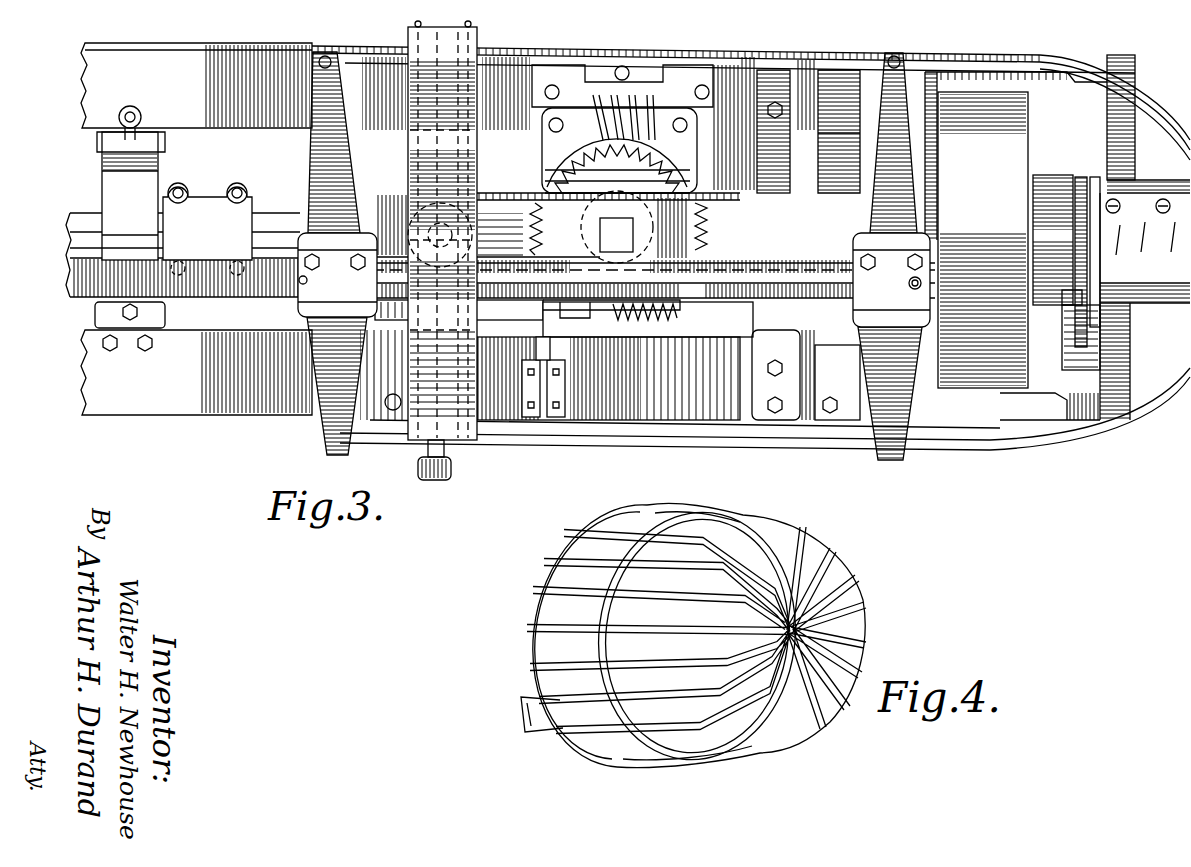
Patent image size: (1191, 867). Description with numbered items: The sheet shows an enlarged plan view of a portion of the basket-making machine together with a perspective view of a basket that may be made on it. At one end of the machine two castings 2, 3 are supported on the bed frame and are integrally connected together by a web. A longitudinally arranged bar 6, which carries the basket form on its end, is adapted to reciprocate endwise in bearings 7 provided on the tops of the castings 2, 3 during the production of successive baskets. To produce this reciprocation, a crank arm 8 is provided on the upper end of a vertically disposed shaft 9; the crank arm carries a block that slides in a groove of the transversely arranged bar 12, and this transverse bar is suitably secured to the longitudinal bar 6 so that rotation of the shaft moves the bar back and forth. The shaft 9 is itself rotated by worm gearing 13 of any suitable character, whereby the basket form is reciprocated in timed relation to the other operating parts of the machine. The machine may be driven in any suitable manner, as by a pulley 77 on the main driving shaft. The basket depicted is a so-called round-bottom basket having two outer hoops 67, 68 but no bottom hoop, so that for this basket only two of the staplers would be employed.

In FIG. 3, the casting 2 is at (335, 253).
In FIG. 3, the casting 3 is at (890, 258).
In FIG. 3, the longitudinally arranged bar 6 is at (78, 280).
In FIG. 3, the bearings 7 is at (614, 280).
In FIG. 3, the crank arm 8 is at (523, 214).
In FIG. 3, the vertically disposed shaft 9 is at (617, 227).
In FIG. 3, the transversely arranged bar 12 is at (490, 254).
In FIG. 3, the worm gearing 13 is at (620, 150).
In FIG. 3, the pulley 77 is at (983, 240).
In FIG. 4, the outer hoop 67 is at (532, 628).
In FIG. 4, the outer hoop 68 is at (612, 553).